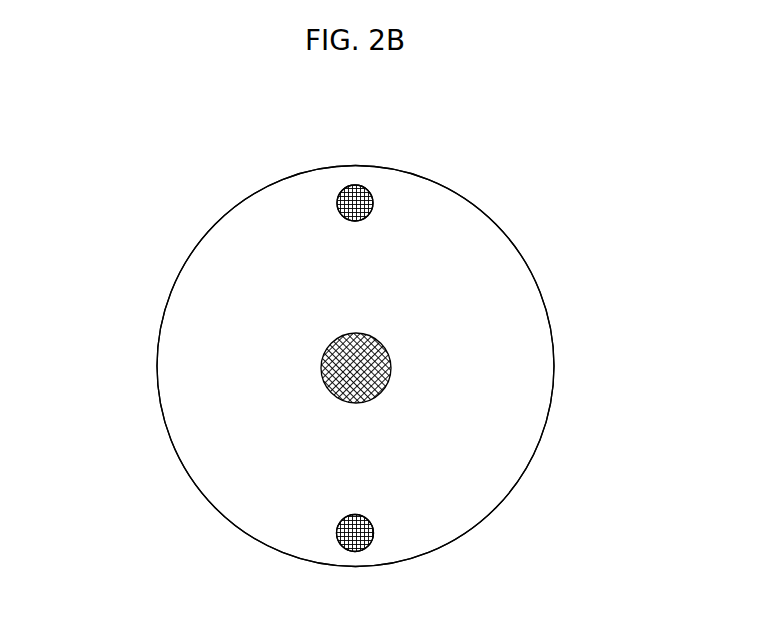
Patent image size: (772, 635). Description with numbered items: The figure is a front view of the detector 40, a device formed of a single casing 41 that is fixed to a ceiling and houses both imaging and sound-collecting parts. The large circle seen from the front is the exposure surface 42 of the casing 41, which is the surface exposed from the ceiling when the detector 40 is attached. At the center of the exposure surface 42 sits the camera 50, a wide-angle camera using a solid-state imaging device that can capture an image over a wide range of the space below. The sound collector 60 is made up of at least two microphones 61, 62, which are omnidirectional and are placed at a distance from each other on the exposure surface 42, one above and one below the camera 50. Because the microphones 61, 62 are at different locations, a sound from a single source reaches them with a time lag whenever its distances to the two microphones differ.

The detector 40 is at (665, 172).
The casing 41 is at (163, 320).
The exposure surface 42 is at (207, 360).
The camera 50 is at (327, 390).
The sound collector 60 is at (667, 353).
The microphone 61 is at (373, 205).
The microphone 62 is at (373, 530).